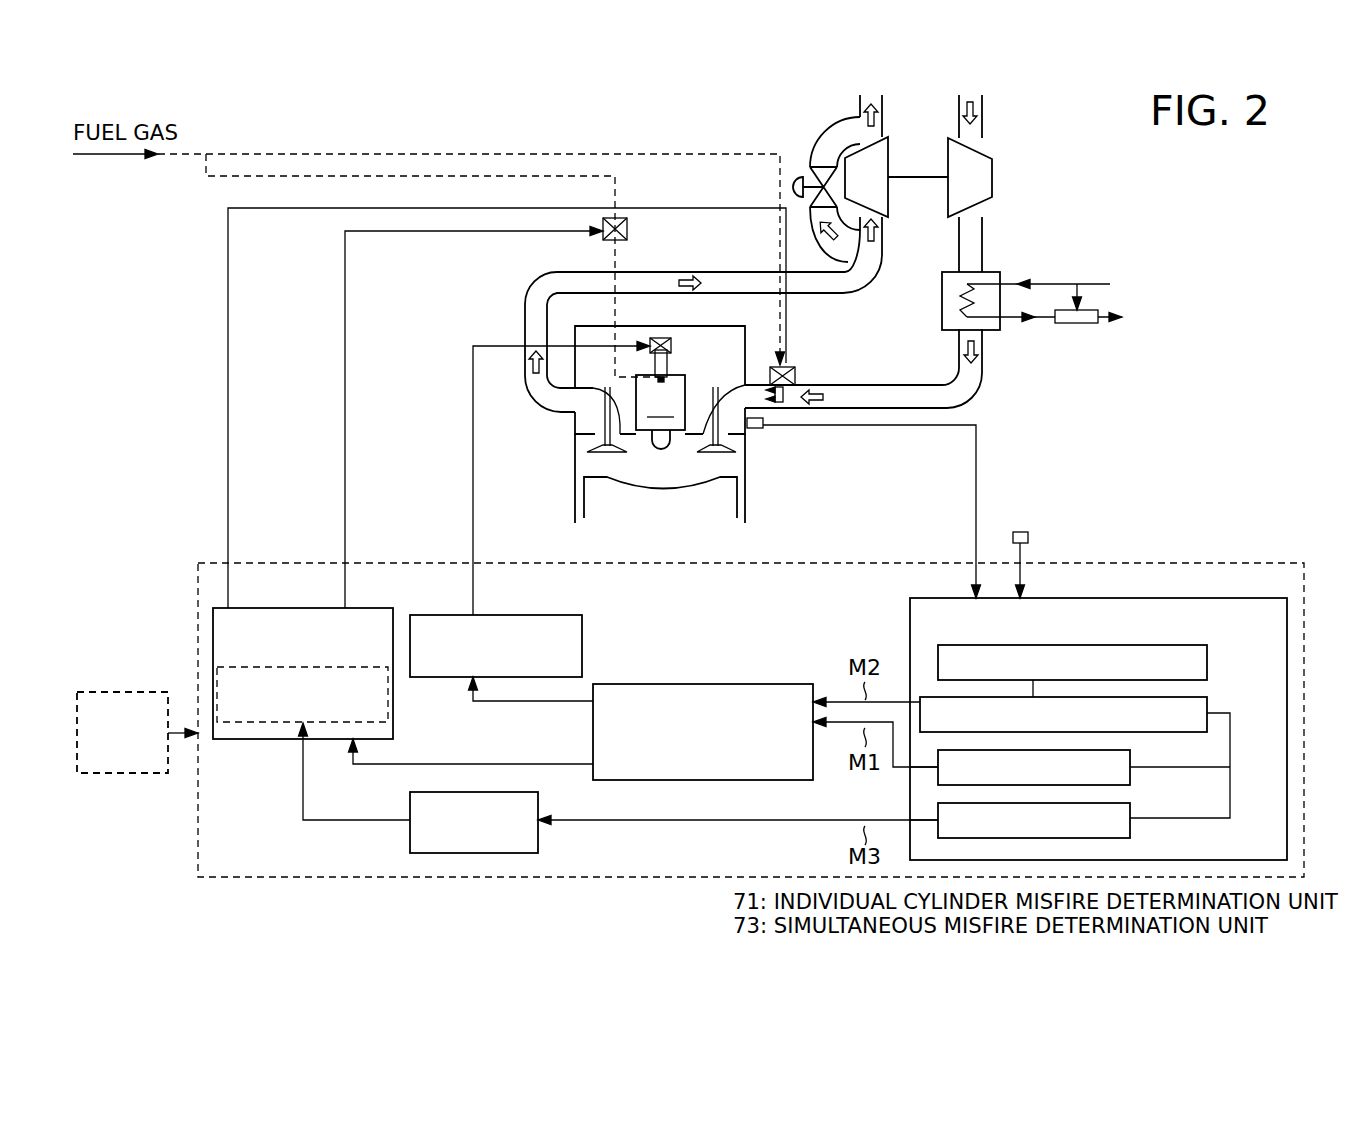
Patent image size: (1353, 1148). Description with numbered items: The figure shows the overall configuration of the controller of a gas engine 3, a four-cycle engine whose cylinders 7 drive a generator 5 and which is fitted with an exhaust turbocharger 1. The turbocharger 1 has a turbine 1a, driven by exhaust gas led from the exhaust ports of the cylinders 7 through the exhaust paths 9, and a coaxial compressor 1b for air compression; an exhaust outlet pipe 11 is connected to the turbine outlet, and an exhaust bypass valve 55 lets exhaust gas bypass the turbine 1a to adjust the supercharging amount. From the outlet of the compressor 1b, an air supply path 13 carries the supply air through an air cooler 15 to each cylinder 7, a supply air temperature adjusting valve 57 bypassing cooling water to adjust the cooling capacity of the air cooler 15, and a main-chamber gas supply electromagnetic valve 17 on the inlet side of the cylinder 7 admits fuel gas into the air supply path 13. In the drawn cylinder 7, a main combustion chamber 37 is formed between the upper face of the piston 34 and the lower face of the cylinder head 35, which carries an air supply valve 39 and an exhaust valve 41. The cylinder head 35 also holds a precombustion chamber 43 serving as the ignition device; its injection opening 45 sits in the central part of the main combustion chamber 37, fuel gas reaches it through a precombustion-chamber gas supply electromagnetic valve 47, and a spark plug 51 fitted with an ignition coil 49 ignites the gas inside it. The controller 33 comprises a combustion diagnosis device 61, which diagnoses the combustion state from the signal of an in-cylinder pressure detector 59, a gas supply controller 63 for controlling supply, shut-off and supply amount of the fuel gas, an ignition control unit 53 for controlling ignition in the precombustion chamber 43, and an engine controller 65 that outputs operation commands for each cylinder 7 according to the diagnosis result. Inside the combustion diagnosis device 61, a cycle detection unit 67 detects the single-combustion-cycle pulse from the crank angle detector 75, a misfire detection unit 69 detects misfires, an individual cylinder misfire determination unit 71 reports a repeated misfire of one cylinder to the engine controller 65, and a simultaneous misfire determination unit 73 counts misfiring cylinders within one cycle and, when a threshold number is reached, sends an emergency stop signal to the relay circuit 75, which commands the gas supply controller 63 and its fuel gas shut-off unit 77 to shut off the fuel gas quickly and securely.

The exhaust turbocharger 1 is at (949, 178).
The turbine 1a is at (890, 143).
The compressor 1b is at (993, 160).
The gas engine 3 is at (527, 426).
The generator 5 is at (130, 692).
The cylinder 7 is at (747, 520).
The exhaust path 9 is at (802, 270).
The exhaust outlet pipe 11 is at (860, 103).
The air supply path 13 is at (878, 385).
The air cooler 15 is at (1000, 272).
The main-chamber gas supply electromagnetic valve 17 is at (796, 376).
The controller 33 is at (878, 563).
The piston 34 is at (724, 491).
The cylinder head 35 is at (656, 326).
The main combustion chamber 37 is at (690, 463).
The air supply valve 39 is at (722, 397).
The exhaust valve 41 is at (600, 452).
The precombustion chamber 43 is at (660, 402).
The injection opening 45 is at (656, 442).
The precombustion-chamber gas supply electromagnetic valve 47 is at (628, 230).
The ignition coil 49 is at (672, 345).
The spark plug 51 is at (668, 365).
The ignition control unit 53 is at (492, 615).
The exhaust bypass valve 55 is at (795, 177).
The supply air temperature adjusting valve 57 is at (1076, 323).
The in-cylinder pressure detector 59 is at (763, 427).
The combustion diagnosis device 61 is at (1165, 598).
The gas supply controller 63 is at (355, 608).
The engine controller 65 is at (776, 684).
The cycle detection unit 67 is at (1208, 662).
The misfire detection unit 69 is at (1208, 700).
The individual cylinder misfire determination unit 71 is at (1131, 757).
The simultaneous misfire determination unit 73 is at (1131, 833).
The relay circuit 75 is at (495, 793).
The fuel gas shut-off unit 77 is at (388, 705).